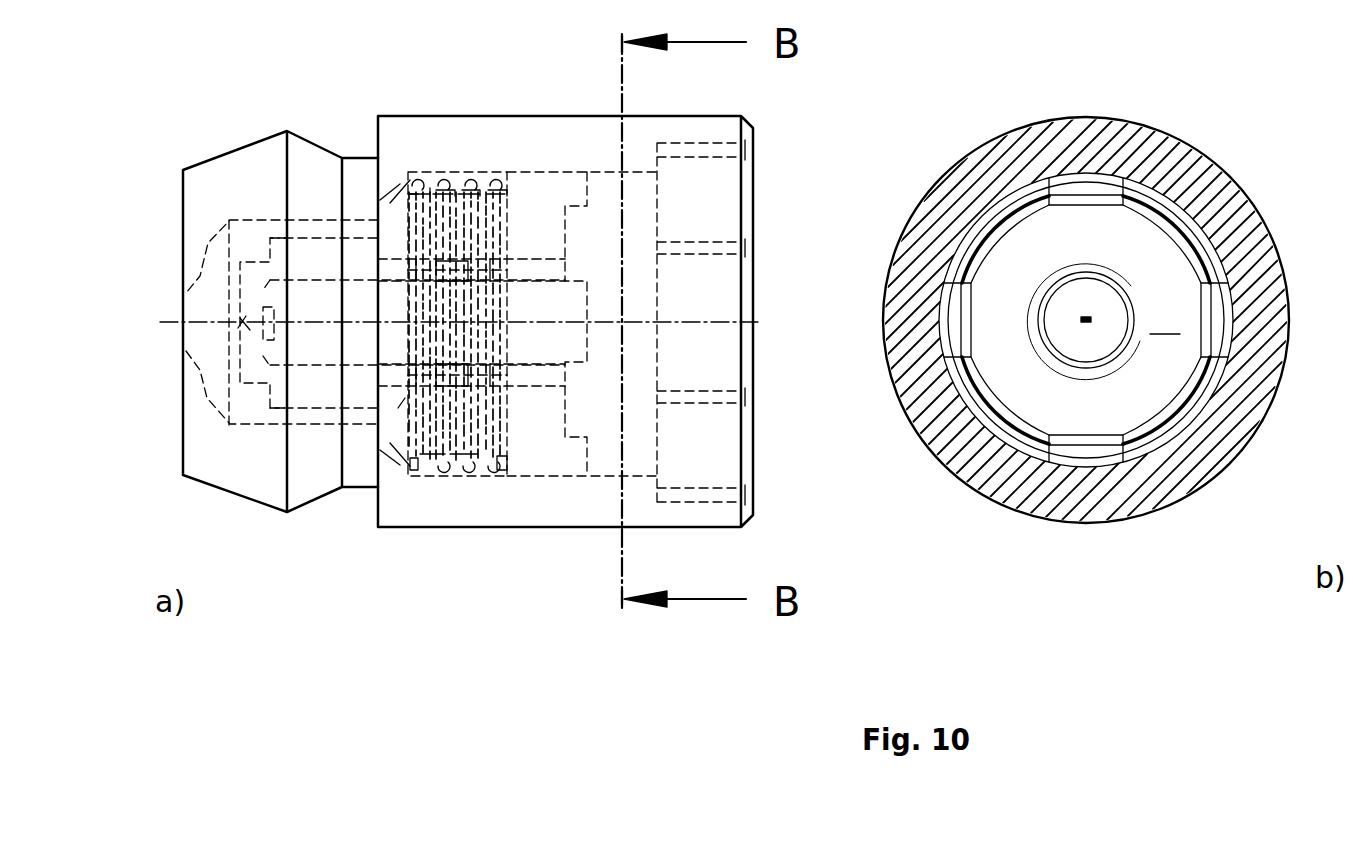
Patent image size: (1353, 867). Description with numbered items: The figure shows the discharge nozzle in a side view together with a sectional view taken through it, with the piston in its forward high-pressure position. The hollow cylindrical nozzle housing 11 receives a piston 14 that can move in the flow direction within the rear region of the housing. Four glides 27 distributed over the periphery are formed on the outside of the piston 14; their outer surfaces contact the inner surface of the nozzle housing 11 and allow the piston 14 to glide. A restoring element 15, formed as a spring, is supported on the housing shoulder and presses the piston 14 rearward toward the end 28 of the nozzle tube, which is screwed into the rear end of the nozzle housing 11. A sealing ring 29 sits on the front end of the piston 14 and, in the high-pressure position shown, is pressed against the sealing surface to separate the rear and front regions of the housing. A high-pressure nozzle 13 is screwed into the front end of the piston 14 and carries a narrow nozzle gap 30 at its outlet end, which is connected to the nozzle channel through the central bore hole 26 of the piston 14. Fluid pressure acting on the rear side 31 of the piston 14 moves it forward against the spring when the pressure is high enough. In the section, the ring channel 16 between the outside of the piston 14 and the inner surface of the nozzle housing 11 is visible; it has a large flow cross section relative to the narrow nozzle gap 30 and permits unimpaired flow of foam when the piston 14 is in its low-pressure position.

The nozzle housing 11 is at (558, 147).
The high-pressure nozzle 13 is at (306, 298).
The piston 14 is at (539, 416).
The restoring element 15 is at (473, 177).
The ring channel 16 is at (1168, 241).
The central bore hole 26 is at (1093, 333).
The glides 27 is at (978, 302).
The end of the nozzle tube 28 is at (723, 218).
The sealing ring 29 is at (403, 416).
The narrow nozzle gap 30 is at (246, 324).
The rear side of the piston 31 is at (1167, 321).